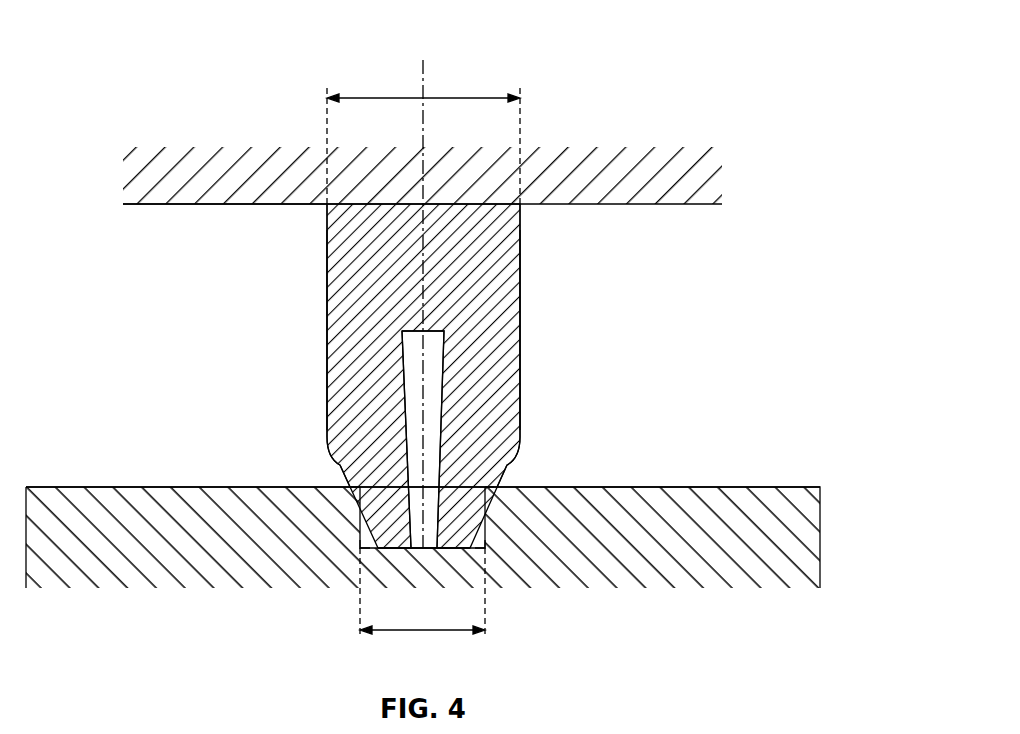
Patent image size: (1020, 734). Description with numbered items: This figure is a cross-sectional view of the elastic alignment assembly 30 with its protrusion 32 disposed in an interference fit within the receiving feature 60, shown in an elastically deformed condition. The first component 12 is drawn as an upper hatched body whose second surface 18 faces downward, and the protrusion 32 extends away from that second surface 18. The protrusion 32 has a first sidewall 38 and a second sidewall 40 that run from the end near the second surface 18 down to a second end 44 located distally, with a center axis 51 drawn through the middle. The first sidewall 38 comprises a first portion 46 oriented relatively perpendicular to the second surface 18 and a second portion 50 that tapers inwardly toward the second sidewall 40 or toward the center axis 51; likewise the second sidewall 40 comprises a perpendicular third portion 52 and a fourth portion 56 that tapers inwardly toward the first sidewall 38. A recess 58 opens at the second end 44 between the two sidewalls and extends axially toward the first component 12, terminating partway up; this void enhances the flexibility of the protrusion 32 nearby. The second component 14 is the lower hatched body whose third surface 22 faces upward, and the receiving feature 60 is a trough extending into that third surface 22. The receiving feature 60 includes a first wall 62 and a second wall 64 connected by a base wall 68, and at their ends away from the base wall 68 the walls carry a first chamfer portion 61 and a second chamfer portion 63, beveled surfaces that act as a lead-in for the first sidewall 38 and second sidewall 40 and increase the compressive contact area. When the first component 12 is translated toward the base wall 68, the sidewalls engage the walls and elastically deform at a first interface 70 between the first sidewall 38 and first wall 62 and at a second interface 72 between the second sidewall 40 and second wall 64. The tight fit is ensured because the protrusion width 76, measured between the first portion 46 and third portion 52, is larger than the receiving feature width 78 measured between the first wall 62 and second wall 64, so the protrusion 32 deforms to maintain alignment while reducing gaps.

The elastic alignment assembly 30 is at (153, 122).
The first component 12 is at (190, 212).
The second component 14 is at (190, 477).
The second surface 18 is at (640, 204).
The third surface 22 is at (680, 487).
The protrusion 32 is at (423, 376).
The first sidewall 38 is at (320, 325).
The second sidewall 40 is at (527, 323).
The second end 44 is at (441, 550).
The first portion 46 is at (327, 240).
The third portion 52 is at (520, 225).
The second portion 50 is at (345, 465).
The fourth portion 56 is at (507, 462).
The recess 58 is at (435, 365).
The receiving feature 60 is at (418, 540).
The first chamfer portion 61 is at (360, 488).
The second chamfer portion 63 is at (483, 488).
The first wall 62 is at (360, 548).
The second wall 64 is at (487, 548).
The base wall 68 is at (422, 550).
The first interface 70 is at (358, 490).
The second interface 72 is at (488, 490).
The center axis 51 is at (420, 80).
The protrusion width 76 is at (445, 98).
The receiving feature width 78 is at (423, 632).